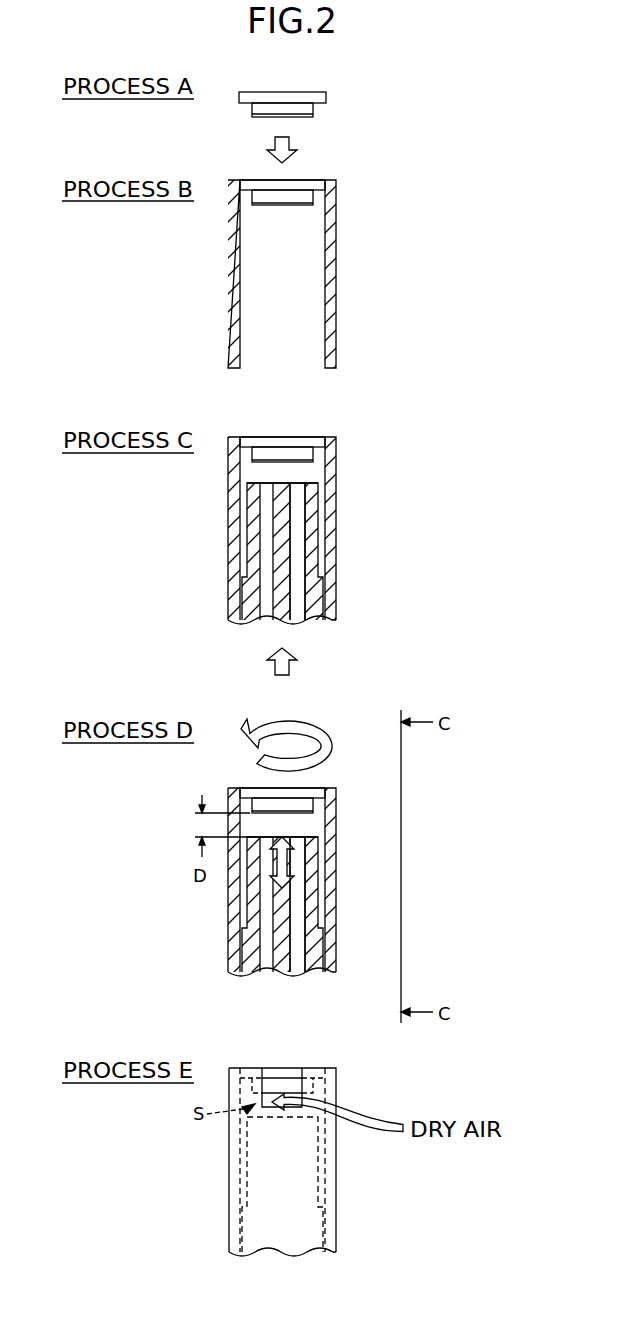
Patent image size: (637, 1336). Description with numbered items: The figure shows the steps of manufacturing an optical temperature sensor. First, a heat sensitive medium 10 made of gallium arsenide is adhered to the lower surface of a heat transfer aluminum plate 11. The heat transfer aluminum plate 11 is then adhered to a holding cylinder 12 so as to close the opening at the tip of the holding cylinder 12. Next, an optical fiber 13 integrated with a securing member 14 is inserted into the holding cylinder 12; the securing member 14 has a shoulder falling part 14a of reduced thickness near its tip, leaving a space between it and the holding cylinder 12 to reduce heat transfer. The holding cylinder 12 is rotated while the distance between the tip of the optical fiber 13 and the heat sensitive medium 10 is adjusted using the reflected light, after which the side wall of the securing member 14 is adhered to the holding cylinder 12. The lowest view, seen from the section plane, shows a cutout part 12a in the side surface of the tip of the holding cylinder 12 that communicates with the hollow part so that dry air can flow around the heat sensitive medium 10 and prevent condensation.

The heat sensitive medium 10 is at (313, 110).
The heat transfer aluminum plate 11 is at (326, 100).
The holding cylinder 12 is at (358, 1165).
The cutout part 12a is at (263, 1086).
The optical fiber 13 is at (358, 992).
The securing member 14 is at (313, 1229).
The shoulder falling part 14a is at (358, 852).